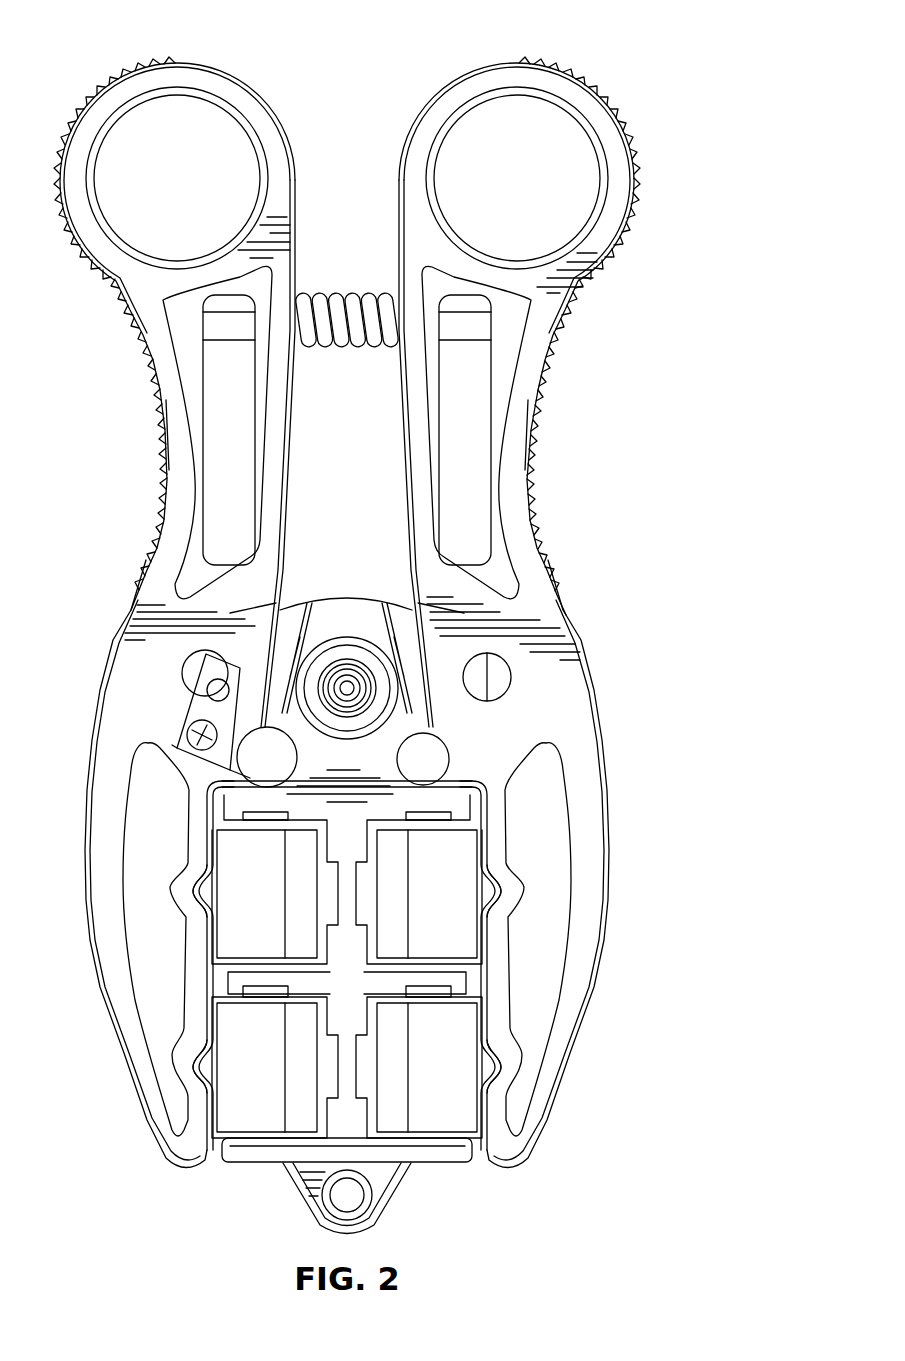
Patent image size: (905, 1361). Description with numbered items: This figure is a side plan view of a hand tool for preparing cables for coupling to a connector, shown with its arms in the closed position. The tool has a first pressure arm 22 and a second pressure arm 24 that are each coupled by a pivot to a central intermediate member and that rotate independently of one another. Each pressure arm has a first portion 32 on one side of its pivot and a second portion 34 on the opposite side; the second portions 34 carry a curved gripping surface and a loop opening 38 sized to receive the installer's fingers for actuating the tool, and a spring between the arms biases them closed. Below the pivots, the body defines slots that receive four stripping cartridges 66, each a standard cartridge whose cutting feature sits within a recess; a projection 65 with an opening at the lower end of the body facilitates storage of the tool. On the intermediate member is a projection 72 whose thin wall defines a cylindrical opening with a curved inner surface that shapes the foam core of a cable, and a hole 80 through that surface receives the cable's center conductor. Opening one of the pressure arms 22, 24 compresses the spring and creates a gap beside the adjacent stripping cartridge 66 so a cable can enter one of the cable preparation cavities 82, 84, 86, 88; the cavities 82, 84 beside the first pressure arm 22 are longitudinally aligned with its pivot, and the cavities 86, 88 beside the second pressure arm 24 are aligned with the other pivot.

The first pressure arm 22 is at (153, 500).
The second pressure arm 24 is at (525, 482).
The first portion 32 is at (577, 1055).
The second portion 34 is at (574, 73).
The loop opening 38 is at (162, 192).
The projection 65 is at (303, 1198).
The stripping cartridge 66 is at (237, 906).
The projection 72 is at (346, 637).
The hole 80 is at (353, 689).
The cable preparation cavity 82 is at (486, 893).
The cable preparation cavity 84 is at (486, 1067).
The cable preparation cavity 86 is at (206, 893).
The cable preparation cavity 88 is at (206, 1065).